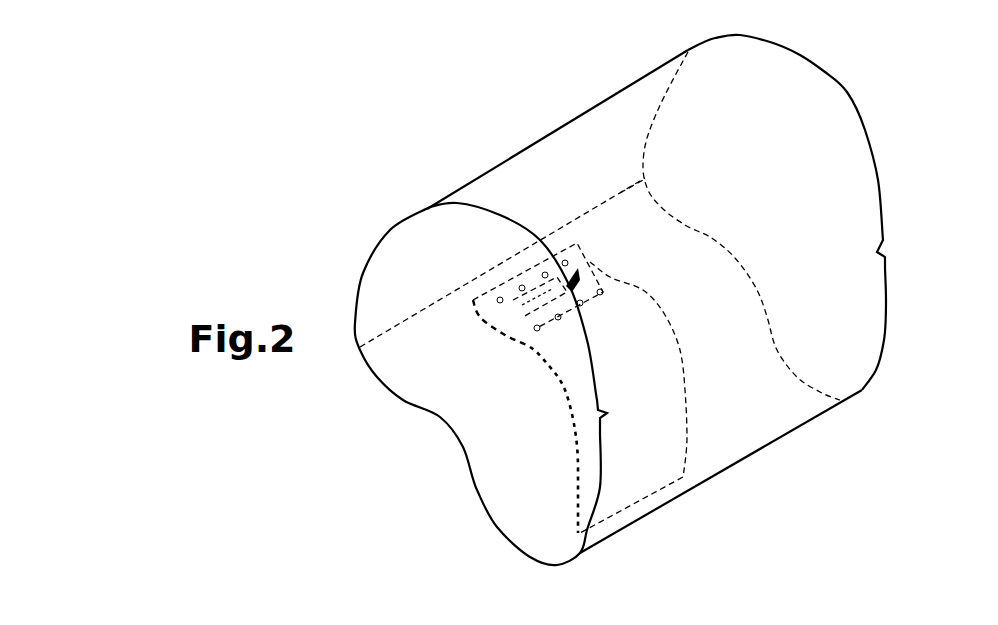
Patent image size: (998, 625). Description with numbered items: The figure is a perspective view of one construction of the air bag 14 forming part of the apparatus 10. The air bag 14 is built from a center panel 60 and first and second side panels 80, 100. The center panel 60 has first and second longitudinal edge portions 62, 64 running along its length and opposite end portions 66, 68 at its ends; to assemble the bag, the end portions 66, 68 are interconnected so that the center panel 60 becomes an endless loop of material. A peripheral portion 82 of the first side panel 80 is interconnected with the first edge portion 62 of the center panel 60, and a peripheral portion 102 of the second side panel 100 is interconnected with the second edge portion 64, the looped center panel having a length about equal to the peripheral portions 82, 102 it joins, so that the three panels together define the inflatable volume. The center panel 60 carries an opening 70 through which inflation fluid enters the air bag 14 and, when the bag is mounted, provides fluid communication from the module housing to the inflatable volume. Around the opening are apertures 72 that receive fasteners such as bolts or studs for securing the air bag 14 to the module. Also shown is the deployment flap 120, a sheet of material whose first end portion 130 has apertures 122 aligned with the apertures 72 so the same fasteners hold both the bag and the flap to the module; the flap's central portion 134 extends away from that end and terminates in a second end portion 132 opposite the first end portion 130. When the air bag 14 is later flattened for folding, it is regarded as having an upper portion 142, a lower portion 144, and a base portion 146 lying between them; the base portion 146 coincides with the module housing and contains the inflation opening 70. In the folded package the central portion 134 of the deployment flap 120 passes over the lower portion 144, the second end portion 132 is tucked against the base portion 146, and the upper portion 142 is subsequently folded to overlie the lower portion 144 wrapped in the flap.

The apparatus 10 is at (405, 99).
The air bag 14 is at (603, 133).
The center panel 60 is at (543, 167).
The first longitudinal edge portion 62 is at (600, 487).
The second longitudinal edge portion 64 is at (883, 305).
The end portion 66 is at (417, 307).
The end portion 68 is at (403, 320).
The opening 70 is at (590, 262).
The apertures 72 is at (557, 317).
The first side panel 80 is at (460, 380).
The peripheral portion 82 is at (493, 513).
The second side panel 100 is at (825, 163).
The peripheral portion 102 is at (797, 400).
The deployment flap 120 is at (643, 457).
The apertures 122 is at (540, 354).
The first end portion 130 is at (494, 332).
The second end portion 132 is at (607, 507).
The central portion 134 is at (653, 357).
The upper portion 142 is at (643, 100).
The lower portion 144 is at (740, 437).
The base portion 146 is at (445, 333).